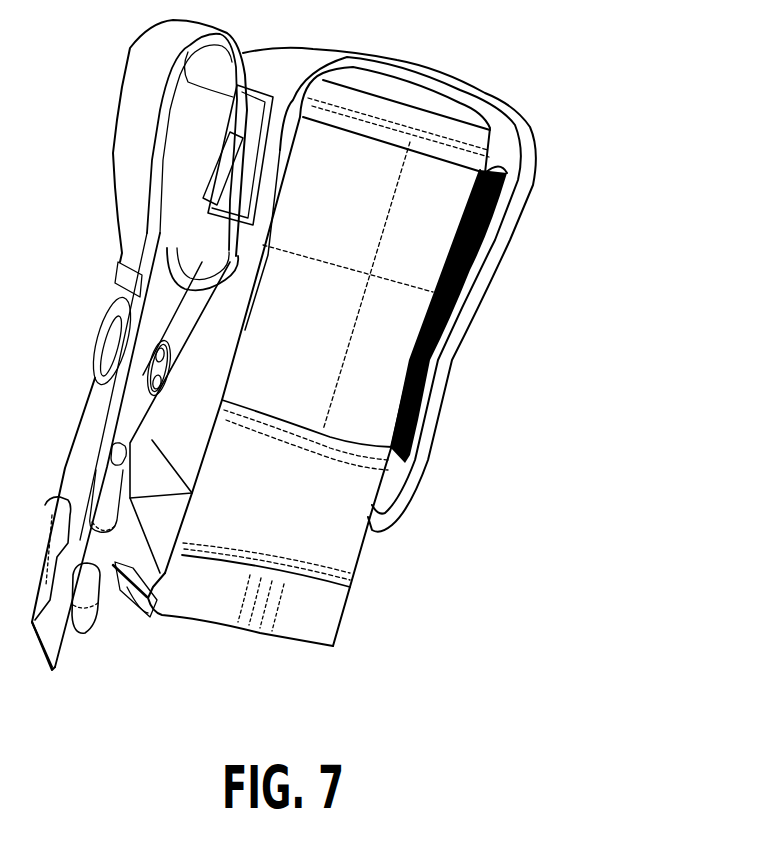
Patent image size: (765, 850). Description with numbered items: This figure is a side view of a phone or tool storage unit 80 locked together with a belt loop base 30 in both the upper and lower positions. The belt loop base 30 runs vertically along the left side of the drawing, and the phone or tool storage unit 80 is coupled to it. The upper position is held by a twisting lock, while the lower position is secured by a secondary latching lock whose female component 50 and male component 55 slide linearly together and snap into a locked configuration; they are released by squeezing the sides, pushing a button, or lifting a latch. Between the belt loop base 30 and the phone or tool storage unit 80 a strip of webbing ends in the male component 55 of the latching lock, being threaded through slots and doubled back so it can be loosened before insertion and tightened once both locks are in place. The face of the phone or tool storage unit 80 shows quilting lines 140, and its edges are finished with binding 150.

The belt loop base 30 is at (133, 47).
The latching lock, female component 50 is at (87, 635).
The latching lock, male component 55 is at (165, 573).
The phone or tool storage unit 80 is at (568, 20).
The quilting lines 140 is at (352, 324).
The binding 150 is at (420, 106).